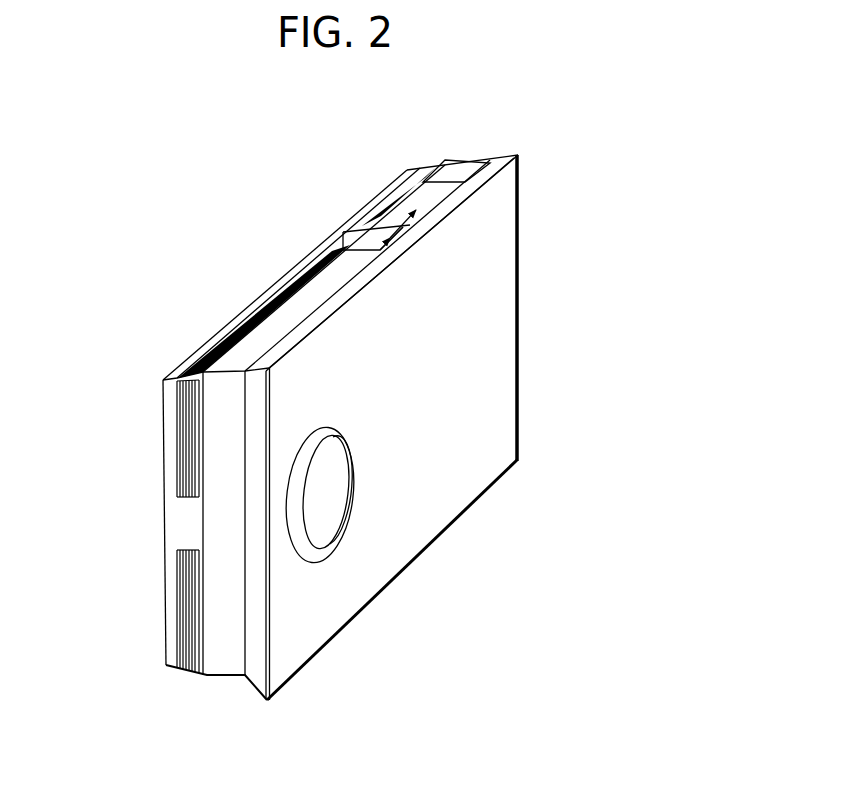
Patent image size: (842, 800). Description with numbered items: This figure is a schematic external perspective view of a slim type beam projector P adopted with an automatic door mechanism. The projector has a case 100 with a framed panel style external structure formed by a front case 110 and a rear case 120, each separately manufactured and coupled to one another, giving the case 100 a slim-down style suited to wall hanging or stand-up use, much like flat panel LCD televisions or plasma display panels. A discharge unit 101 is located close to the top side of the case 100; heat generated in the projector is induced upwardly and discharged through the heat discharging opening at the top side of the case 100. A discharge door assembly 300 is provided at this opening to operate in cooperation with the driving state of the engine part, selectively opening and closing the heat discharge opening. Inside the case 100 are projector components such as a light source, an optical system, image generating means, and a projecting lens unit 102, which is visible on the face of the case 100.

The portable device / product P is at (550, 321).
The case 100 is at (212, 679).
The discharge unit 101 is at (428, 193).
The projecting lens unit 102 is at (320, 512).
The front case 110 is at (287, 660).
The rear case 120 is at (180, 527).
The discharge door assembly 300 is at (345, 238).